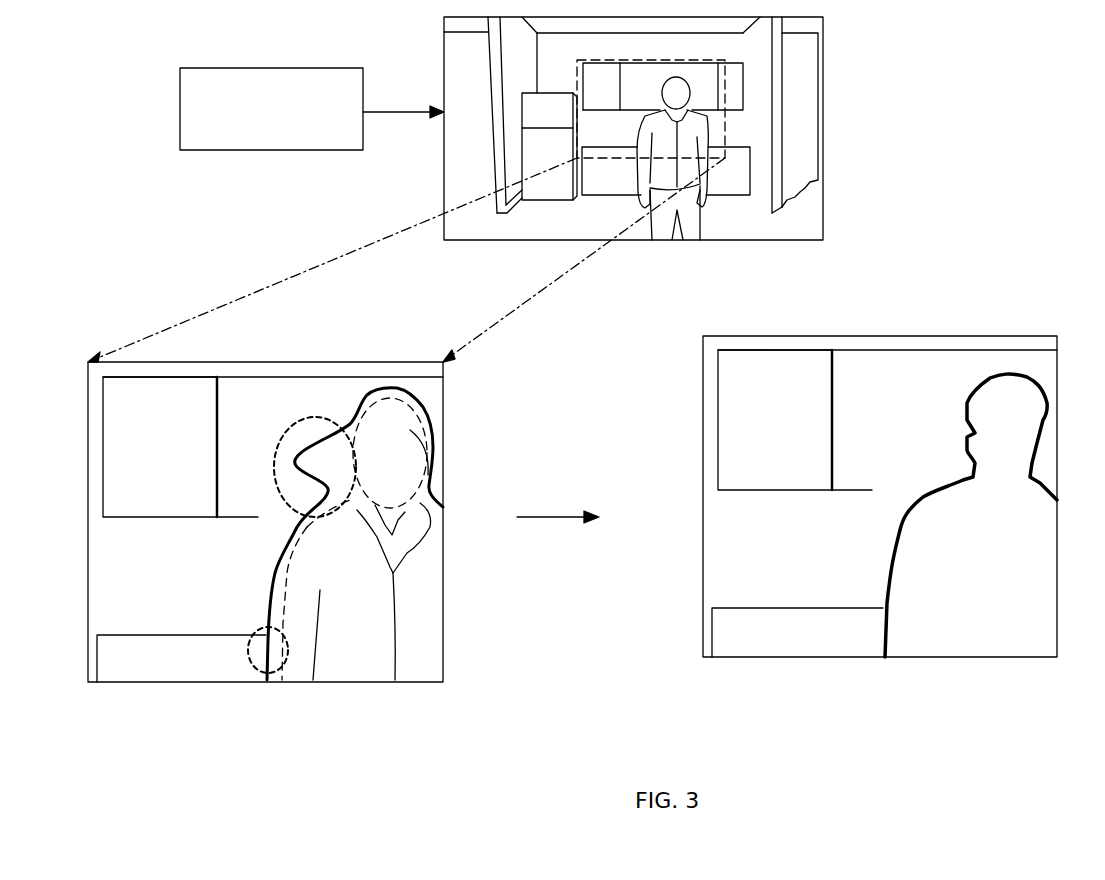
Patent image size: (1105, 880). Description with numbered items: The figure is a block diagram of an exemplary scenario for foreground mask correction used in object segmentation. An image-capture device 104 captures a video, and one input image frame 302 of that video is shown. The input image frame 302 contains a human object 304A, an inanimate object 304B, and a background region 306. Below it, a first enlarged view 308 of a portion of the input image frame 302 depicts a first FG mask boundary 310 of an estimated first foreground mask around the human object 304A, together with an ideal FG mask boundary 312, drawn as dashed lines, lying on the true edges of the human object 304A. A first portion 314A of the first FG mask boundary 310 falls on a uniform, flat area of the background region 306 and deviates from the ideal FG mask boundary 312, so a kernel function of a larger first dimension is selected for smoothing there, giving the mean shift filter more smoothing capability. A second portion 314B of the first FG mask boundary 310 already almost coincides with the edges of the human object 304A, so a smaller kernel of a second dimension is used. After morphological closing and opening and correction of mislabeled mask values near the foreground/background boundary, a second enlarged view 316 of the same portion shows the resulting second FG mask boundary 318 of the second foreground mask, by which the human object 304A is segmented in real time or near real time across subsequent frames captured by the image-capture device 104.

The image-capture device 104 is at (312, 109).
The input image frame 302 is at (823, 43).
The human object 304A is at (708, 138).
The inanimate object 304B is at (522, 125).
The background region 306 is at (752, 168).
The first enlarged view 308 is at (233, 362).
The first FG mask boundary 310 is at (430, 483).
The ideal FG mask boundary 312 is at (362, 413).
The first portion of the first FG mask boundary 314A is at (303, 477).
The second portion of the first FG mask boundary 314B is at (270, 653).
The second enlarged view 316 is at (847, 336).
The second FG mask boundary 318 is at (992, 378).